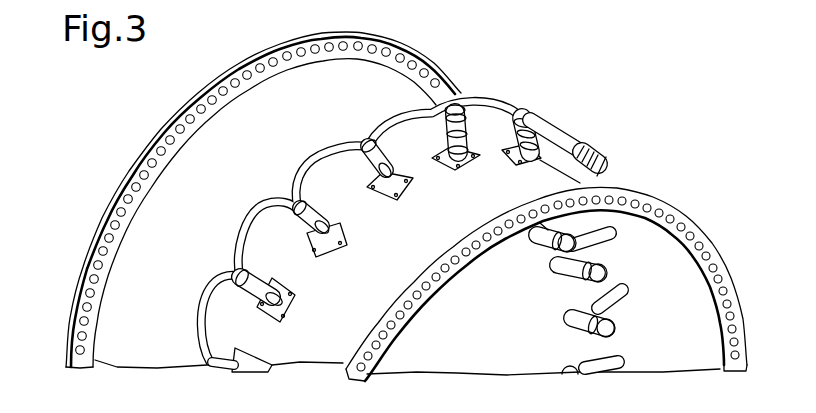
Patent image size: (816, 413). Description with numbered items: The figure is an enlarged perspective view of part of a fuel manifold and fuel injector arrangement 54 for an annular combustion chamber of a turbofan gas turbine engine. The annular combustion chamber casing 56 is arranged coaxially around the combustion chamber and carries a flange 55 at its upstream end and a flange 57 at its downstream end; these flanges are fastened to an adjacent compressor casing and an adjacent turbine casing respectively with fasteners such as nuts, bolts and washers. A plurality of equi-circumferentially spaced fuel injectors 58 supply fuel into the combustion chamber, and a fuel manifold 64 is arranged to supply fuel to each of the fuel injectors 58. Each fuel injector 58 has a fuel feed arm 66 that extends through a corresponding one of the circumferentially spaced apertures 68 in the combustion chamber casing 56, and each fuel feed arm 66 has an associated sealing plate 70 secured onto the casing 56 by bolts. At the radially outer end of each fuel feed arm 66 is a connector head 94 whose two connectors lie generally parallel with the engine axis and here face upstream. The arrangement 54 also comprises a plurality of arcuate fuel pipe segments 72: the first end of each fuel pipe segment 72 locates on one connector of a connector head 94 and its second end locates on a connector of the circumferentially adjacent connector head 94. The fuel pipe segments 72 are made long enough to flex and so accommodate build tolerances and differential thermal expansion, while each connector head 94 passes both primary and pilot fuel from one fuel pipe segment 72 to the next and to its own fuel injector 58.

The fuel manifold and fuel injector arrangement 54 is at (586, 117).
The flange 55 is at (237, 82).
The annular combustion chamber casing 56 is at (151, 247).
The flange 57 is at (682, 222).
The fuel injectors 58 is at (537, 238).
The fuel manifold 64 is at (510, 104).
The fuel feed arm 66 is at (317, 258).
The apertures 68 is at (602, 250).
The sealing plate 70 is at (347, 229).
The fuel pipe segments 72 is at (387, 117).
The connector head 94 is at (457, 130).